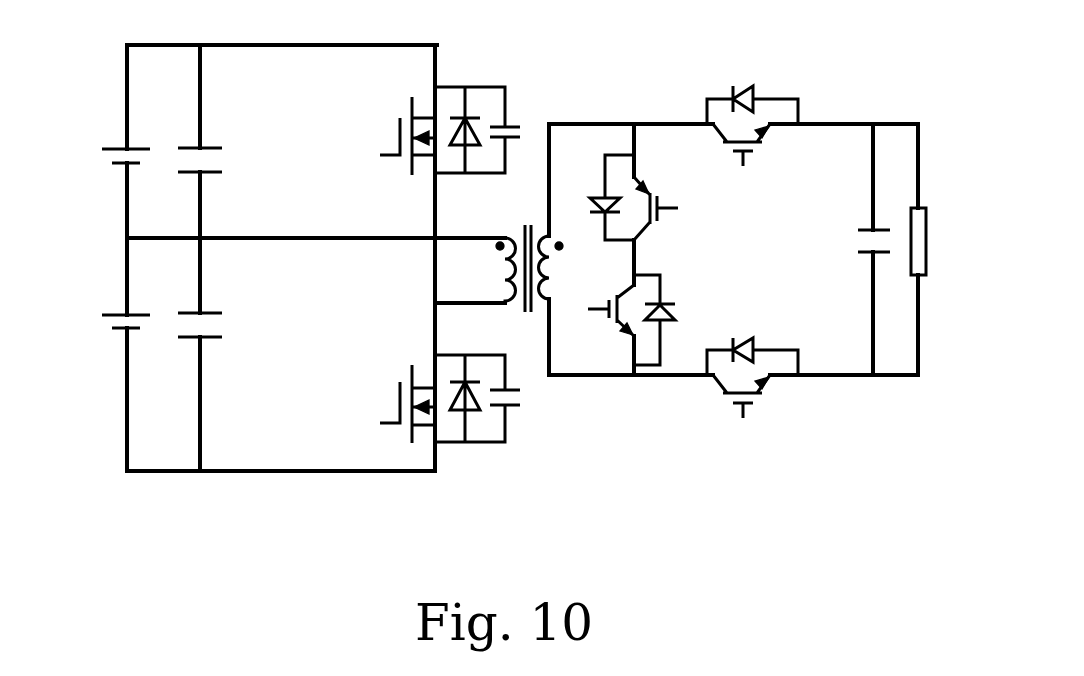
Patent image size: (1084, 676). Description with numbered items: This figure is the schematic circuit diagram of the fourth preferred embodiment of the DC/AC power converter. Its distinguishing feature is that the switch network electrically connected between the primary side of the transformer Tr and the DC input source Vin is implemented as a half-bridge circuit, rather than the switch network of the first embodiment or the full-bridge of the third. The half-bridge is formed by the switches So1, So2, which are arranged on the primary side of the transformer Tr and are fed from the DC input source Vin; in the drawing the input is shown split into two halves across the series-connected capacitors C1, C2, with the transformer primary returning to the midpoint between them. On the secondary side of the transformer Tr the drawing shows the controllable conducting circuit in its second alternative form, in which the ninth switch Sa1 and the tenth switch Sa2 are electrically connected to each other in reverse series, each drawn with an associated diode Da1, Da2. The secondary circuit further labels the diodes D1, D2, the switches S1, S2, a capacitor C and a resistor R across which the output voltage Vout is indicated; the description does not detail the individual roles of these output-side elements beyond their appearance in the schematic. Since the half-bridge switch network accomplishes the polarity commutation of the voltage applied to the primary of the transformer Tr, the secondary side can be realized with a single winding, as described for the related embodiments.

The DC input source Vin is at (95, 222).
The input capacitor C1 is at (222, 141).
The input capacitor C2 is at (222, 354).
The switch So1 is at (431, 131).
The switch So2 is at (431, 399).
The transformer Tr is at (499, 248).
The ninth switch Sa1 is at (663, 200).
The tenth switch Sa2 is at (594, 308).
The auxiliary diode Da1 is at (594, 197).
The auxiliary diode Da2 is at (679, 320).
The rectifier diode D1 is at (752, 87).
The rectifier diode D2 is at (752, 337).
The synchronous rectifier switch S1 is at (741, 163).
The synchronous rectifier switch S2 is at (741, 414).
The output capacitor C is at (857, 249).
The load resistor R is at (931, 241).
The output voltage Vout is at (834, 176).